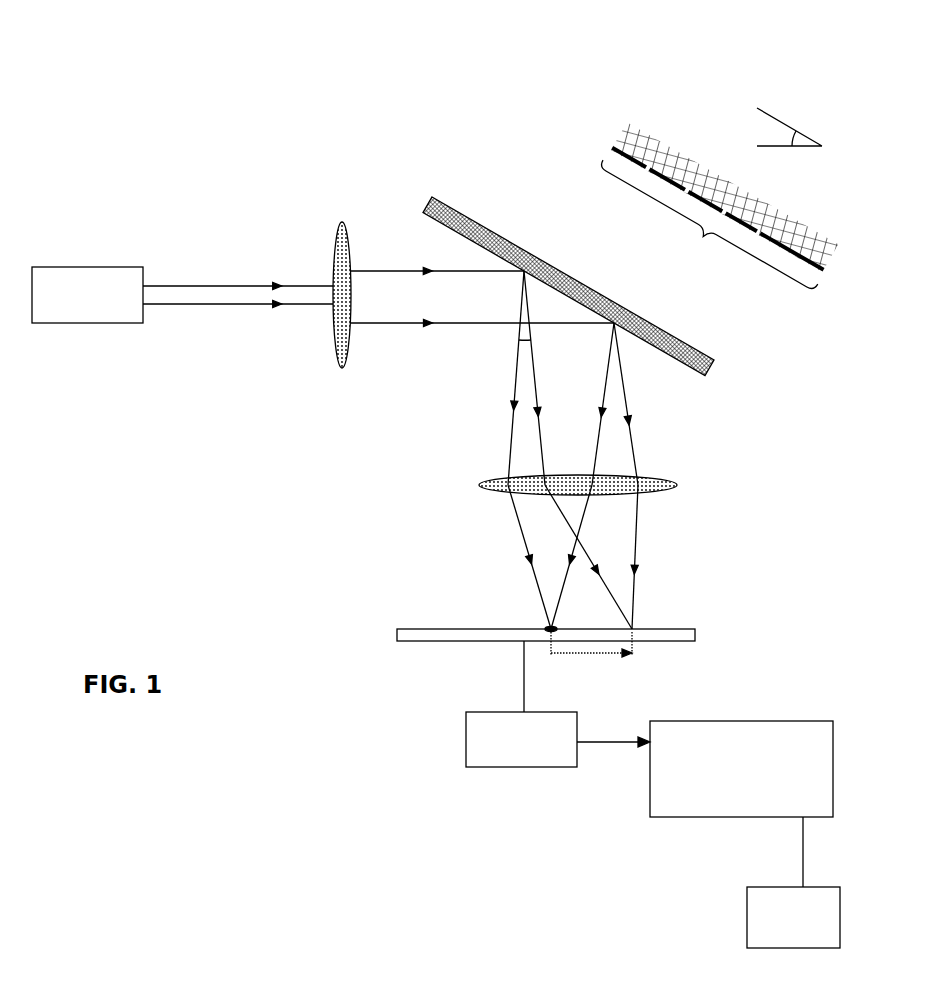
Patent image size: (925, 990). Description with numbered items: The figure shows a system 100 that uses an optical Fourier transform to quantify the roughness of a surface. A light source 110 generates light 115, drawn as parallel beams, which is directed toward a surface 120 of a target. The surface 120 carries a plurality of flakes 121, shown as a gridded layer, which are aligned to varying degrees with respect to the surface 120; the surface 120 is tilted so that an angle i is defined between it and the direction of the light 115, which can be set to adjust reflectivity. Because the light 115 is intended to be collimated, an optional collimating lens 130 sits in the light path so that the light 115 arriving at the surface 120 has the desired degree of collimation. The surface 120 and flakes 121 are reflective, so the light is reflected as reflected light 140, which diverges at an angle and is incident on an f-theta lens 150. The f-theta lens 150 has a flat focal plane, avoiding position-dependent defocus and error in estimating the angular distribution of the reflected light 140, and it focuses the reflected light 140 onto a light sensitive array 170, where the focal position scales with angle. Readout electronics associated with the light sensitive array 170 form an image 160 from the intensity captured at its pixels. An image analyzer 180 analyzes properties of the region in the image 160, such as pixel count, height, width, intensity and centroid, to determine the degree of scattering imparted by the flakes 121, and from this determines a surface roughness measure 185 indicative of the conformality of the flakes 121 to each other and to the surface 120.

The system 100 is at (158, 50).
The light source 110 is at (87, 295).
The light 115 is at (197, 286).
The surface 120 is at (702, 350).
The flakes 121 is at (655, 347).
The collimating lens 130 is at (350, 247).
The reflected light 140 is at (508, 438).
The f-theta lens 150 is at (663, 492).
The image 160 is at (466, 740).
The light sensitive array 170 is at (425, 629).
The image analyzer 180 is at (705, 769).
The surface roughness measure 185 is at (793, 882).